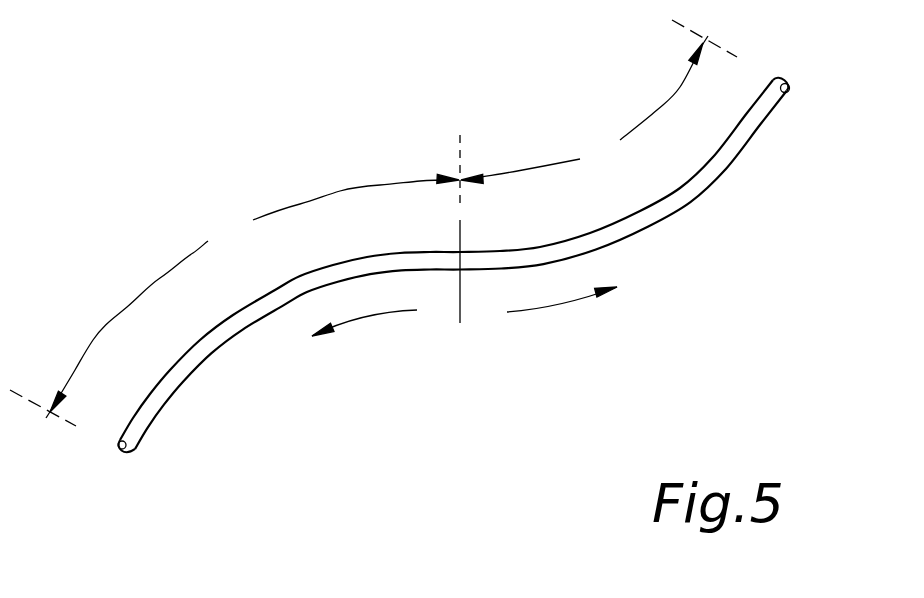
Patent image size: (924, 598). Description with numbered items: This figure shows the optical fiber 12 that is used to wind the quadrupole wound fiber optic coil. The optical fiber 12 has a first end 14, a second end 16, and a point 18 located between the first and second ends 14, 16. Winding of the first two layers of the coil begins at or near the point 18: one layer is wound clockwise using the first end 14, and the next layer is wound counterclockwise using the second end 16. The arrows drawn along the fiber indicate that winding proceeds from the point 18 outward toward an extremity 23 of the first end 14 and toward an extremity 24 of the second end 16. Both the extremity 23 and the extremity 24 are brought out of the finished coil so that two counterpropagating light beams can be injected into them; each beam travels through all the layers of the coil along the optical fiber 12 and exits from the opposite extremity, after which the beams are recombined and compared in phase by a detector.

The optical fiber 12 is at (297, 450).
The first end 14 is at (234, 300).
The second end 16 is at (599, 101).
The point 18 is at (460, 255).
The extremity of the first end 23 is at (118, 448).
The extremity of the second end 24 is at (790, 90).